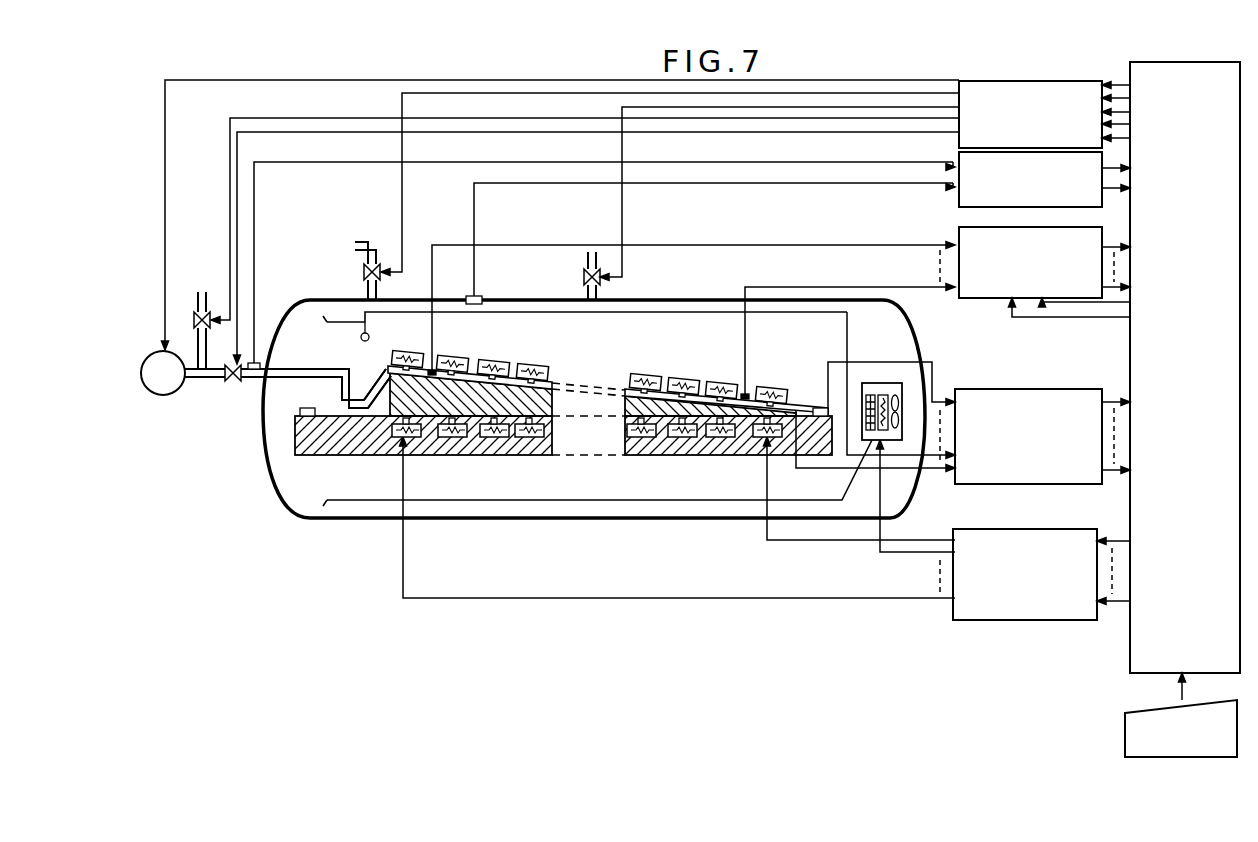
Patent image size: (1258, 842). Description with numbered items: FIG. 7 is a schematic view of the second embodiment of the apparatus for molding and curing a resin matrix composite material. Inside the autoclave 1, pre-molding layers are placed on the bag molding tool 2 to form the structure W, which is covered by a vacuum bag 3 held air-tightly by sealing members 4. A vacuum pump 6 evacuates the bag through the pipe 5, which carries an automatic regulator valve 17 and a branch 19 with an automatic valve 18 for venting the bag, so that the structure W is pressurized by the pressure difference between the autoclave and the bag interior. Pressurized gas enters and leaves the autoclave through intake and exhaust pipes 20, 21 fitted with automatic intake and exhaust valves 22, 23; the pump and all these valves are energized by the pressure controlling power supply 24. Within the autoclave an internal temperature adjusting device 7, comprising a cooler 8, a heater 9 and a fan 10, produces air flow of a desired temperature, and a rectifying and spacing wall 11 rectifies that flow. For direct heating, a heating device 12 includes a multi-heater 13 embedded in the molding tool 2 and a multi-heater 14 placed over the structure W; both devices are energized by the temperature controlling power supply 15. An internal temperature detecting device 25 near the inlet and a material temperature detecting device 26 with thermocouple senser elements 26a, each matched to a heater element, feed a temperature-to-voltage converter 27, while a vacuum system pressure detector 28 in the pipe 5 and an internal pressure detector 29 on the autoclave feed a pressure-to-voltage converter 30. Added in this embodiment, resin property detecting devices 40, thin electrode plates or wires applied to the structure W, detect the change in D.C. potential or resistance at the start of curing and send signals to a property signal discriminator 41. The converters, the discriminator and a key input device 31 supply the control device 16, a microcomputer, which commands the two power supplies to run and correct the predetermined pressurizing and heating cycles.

The autoclave 1 is at (368, 520).
The bag molding tool 2 is at (522, 455).
The vacuum bag 3 is at (375, 382).
The sealing members 4 is at (303, 408).
The pipe 5 is at (216, 378).
The vacuum pump 6 is at (170, 395).
The internal temperature adjusting device 7 is at (901, 413).
The cooler 8 is at (870, 395).
The heater 9 is at (884, 395).
The fan 10 is at (898, 395).
The rectifying and spacing wall 11 is at (664, 500).
The heating device 12 is at (654, 368).
The multi-heater 13 is at (682, 440).
The multi-heater 14 is at (690, 379).
The temperature controlling power supply 15 is at (970, 621).
The control device 16 is at (1128, 664).
The automatic regulator valve 17 is at (236, 382).
The automatic valve 18 is at (196, 300).
The branch 19 is at (196, 326).
The intake pipe 20 is at (364, 286).
The exhaust pipe 21 is at (600, 294).
The automatic intake valve 22 is at (362, 252).
The automatic exhaust valve 23 is at (582, 272).
The pressure controlling power supply 24 is at (978, 80).
The internal temperature detecting device 25 is at (370, 337).
The material temperature detecting device 26 is at (462, 358).
The senser elements 26a is at (535, 380).
The temperature-to-voltage converter 27 is at (994, 388).
The vacuum system pressure detector 28 is at (276, 368).
The internal pressure detector 29 is at (478, 296).
The pressure-to-voltage converter 30 is at (956, 160).
The key input device 31 is at (1125, 738).
The resin property detecting devices 40 is at (433, 370).
The property signal discriminator 41 is at (957, 232).
The structure W is at (542, 392).